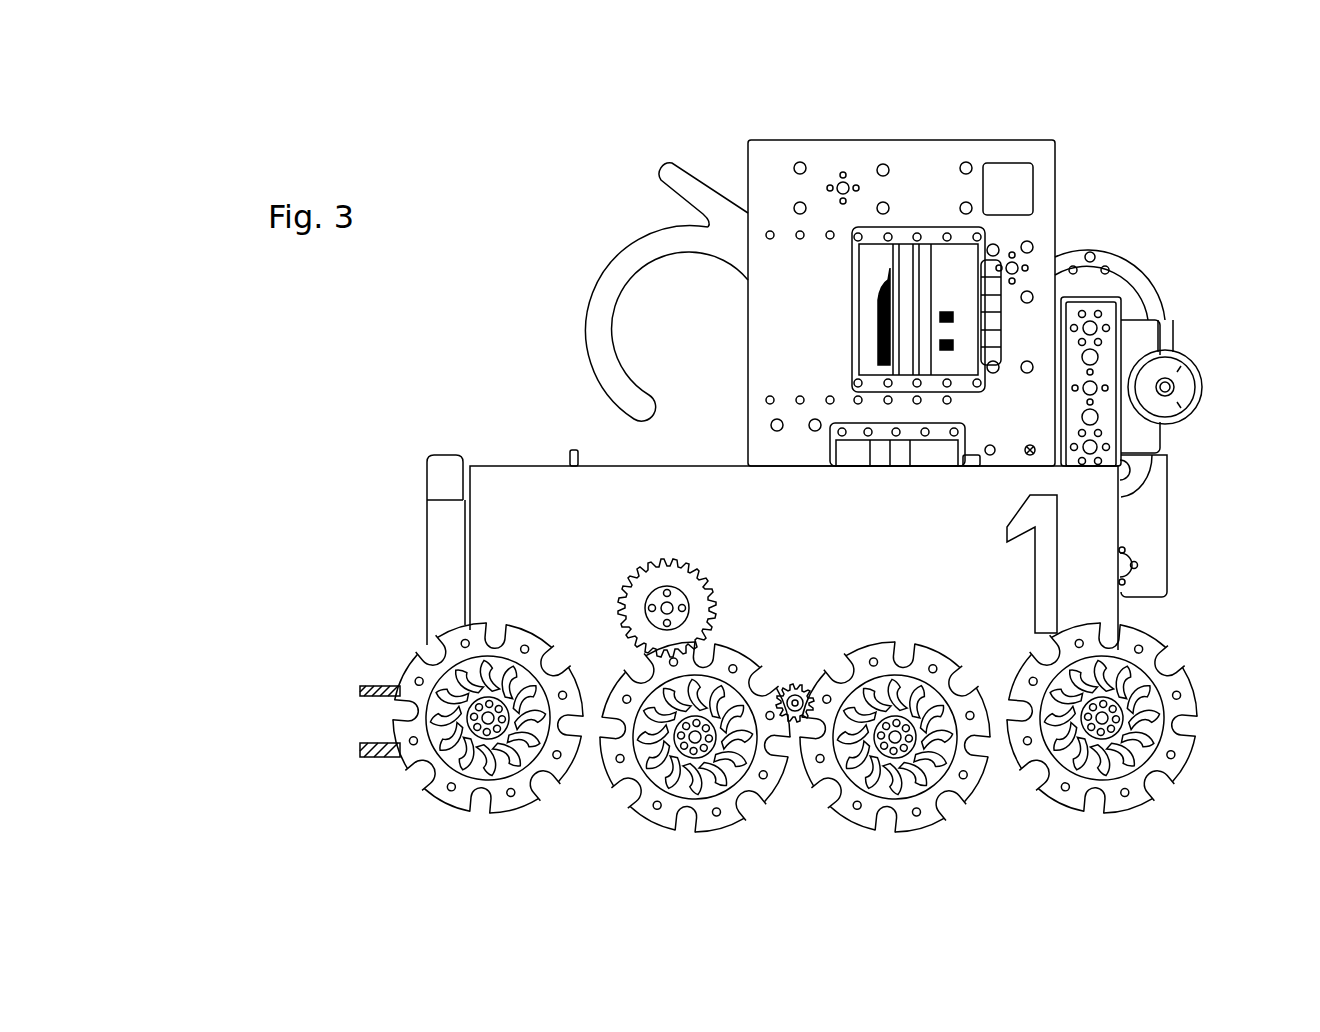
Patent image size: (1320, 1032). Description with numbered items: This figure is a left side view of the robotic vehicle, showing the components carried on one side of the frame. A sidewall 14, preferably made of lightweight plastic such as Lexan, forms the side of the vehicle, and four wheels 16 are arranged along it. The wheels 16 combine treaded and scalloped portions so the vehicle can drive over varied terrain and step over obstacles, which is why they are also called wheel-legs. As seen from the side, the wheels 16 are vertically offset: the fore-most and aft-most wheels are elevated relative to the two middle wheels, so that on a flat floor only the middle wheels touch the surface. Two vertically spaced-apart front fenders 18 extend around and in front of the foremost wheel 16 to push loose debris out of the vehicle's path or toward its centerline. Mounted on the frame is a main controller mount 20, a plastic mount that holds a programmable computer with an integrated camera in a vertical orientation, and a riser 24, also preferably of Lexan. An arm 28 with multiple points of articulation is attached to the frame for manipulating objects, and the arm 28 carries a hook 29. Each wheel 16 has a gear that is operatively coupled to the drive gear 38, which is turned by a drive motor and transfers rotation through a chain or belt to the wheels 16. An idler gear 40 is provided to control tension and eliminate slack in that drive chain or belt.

The sidewall 14 is at (548, 530).
The wheels 16 is at (633, 812).
The front fenders 18 is at (360, 750).
The main controller mount 20 is at (448, 538).
The riser 24 is at (926, 182).
The arm 28 is at (1137, 338).
The hook 29 is at (718, 237).
The drive gear 38 is at (657, 577).
The idler gear 40 is at (797, 715).